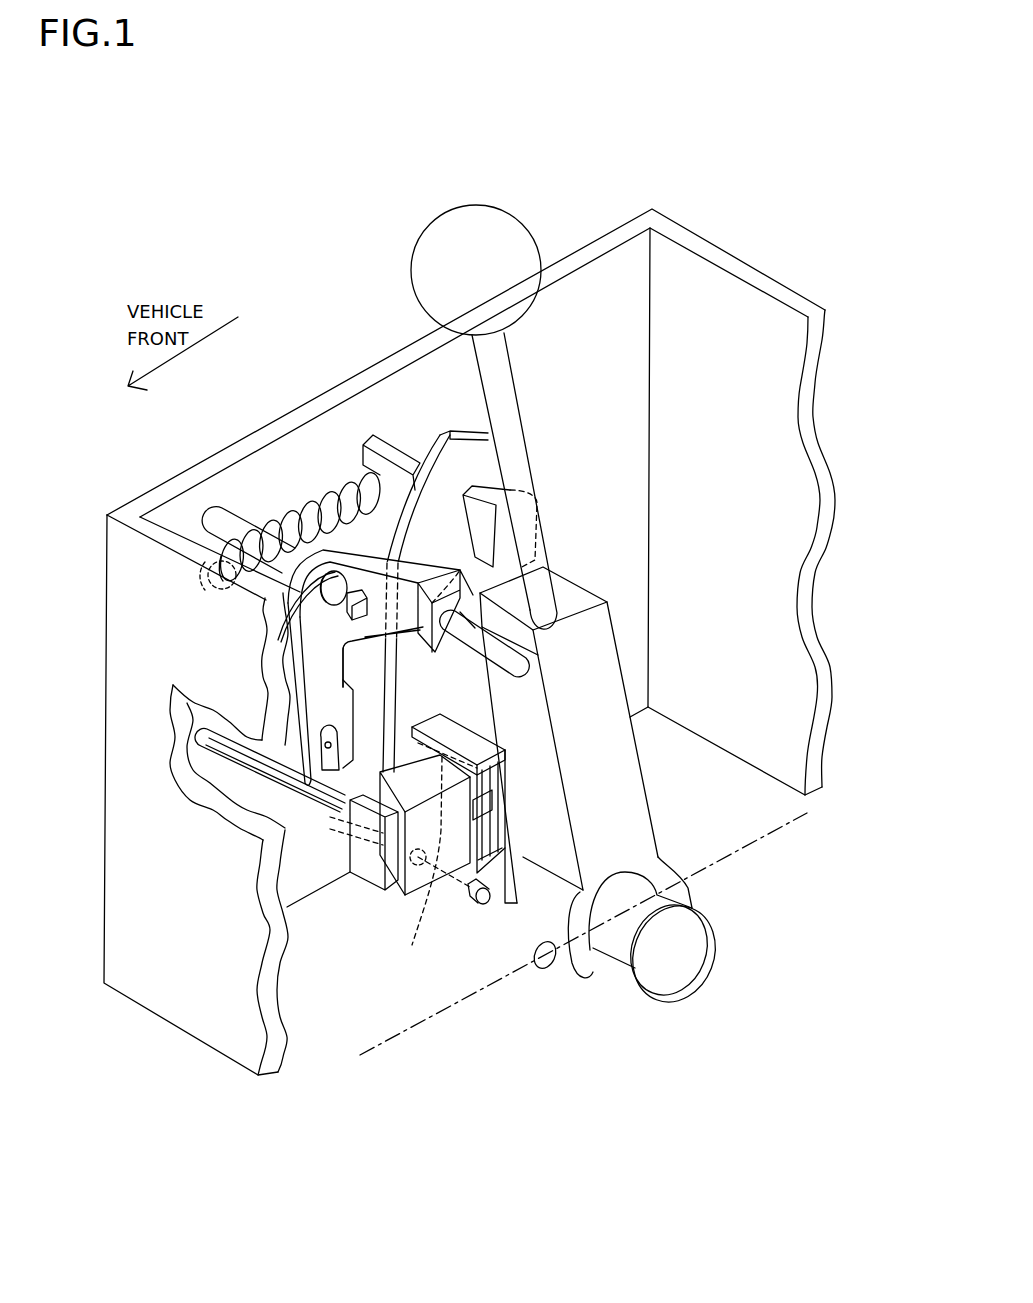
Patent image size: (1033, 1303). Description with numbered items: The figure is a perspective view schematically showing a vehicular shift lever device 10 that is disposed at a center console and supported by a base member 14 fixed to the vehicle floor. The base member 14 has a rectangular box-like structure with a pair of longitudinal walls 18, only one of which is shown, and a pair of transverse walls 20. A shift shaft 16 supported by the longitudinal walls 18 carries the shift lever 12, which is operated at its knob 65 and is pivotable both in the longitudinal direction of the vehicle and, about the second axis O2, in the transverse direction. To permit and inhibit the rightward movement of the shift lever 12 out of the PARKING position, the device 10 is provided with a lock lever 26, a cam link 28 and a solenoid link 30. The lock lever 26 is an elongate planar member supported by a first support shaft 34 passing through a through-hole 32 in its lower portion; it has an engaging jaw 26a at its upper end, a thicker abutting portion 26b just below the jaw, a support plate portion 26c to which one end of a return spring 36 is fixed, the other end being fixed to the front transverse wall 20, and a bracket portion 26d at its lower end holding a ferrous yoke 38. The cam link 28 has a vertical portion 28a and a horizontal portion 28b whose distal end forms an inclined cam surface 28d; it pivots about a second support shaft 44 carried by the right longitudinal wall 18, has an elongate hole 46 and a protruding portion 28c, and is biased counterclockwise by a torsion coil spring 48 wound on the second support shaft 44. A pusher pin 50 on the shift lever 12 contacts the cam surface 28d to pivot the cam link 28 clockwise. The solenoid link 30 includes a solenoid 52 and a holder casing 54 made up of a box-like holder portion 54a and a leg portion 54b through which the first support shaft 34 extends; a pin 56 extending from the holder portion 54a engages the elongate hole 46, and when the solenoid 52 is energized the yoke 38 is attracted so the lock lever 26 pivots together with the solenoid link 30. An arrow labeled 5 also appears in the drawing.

The vehicular shift lever device 10 is at (645, 125).
The shift lever 12 is at (505, 198).
The base member 14 is at (730, 224).
The shift shaft 16 is at (620, 947).
The longitudinal wall 18 is at (303, 462).
The transverse wall 20 is at (765, 318).
The lock lever 26 is at (432, 418).
The engaging jaw 26a is at (478, 443).
The abutting portion 26b is at (508, 525).
The support plate portion 26c is at (381, 448).
The bracket portion 26d is at (508, 887).
The cam link 28 is at (355, 498).
The vertical portion 28a is at (278, 738).
The horizontal portion 28b is at (352, 470).
The protruding portion 28c is at (359, 610).
The cam surface 28d is at (453, 593).
The solenoid link 30 is at (366, 948).
The through-hole 32 is at (426, 915).
The first support shaft 34 is at (338, 815).
The return spring 36 is at (220, 522).
The yoke 38 is at (497, 845).
The second support shaft 44 is at (205, 568).
The elongate hole 46 is at (312, 714).
The torsion coil spring 48 is at (262, 596).
The pusher pin 50 is at (510, 658).
The solenoid 52 is at (364, 853).
The holder casing 54 is at (430, 925).
The holder portion 54a is at (410, 898).
The leg portion 54b is at (488, 905).
The pin 56 is at (340, 812).
The knob 65 is at (442, 247).
The rotation direction 5 is at (745, 840).
The second axis O2 is at (723, 862).